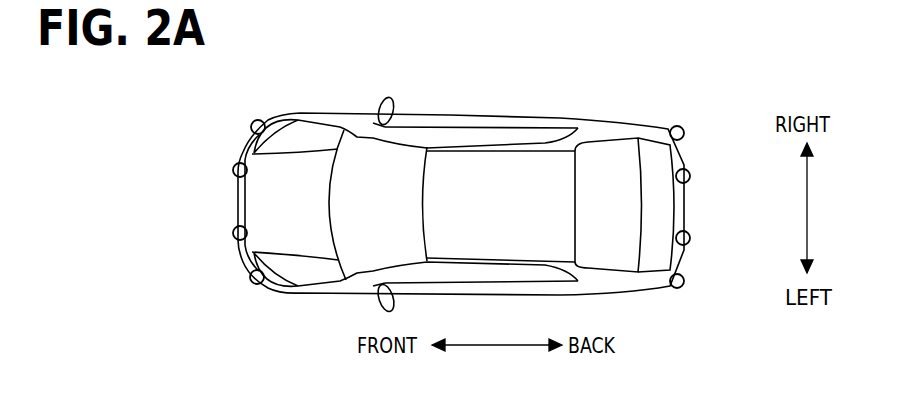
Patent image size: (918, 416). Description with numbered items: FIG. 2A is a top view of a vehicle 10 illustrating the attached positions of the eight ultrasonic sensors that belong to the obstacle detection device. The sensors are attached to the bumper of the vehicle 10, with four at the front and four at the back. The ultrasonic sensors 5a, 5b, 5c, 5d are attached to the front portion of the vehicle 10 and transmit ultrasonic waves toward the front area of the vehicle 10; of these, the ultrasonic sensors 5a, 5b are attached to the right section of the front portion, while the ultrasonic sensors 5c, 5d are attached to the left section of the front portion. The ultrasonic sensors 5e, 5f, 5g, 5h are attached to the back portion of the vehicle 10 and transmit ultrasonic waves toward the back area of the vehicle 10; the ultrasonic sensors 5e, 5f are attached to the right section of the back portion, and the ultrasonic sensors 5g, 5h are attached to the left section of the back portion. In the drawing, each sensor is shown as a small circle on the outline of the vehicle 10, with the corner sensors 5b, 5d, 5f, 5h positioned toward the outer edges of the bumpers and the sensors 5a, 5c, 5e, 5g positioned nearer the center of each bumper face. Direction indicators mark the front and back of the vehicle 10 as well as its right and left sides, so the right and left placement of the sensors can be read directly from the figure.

The vehicle 10 is at (315, 294).
The ultrasonic sensor 5a is at (233, 170).
The ultrasonic sensor 5b is at (251, 127).
The ultrasonic sensor 5c is at (233, 233).
The ultrasonic sensor 5d is at (250, 277).
The ultrasonic sensor 5e is at (690, 177).
The ultrasonic sensor 5f is at (684, 133).
The ultrasonic sensor 5g is at (690, 239).
The ultrasonic sensor 5h is at (684, 281).